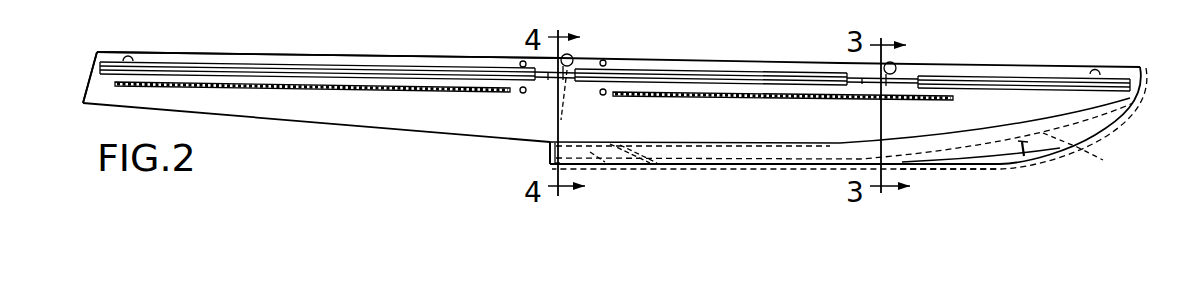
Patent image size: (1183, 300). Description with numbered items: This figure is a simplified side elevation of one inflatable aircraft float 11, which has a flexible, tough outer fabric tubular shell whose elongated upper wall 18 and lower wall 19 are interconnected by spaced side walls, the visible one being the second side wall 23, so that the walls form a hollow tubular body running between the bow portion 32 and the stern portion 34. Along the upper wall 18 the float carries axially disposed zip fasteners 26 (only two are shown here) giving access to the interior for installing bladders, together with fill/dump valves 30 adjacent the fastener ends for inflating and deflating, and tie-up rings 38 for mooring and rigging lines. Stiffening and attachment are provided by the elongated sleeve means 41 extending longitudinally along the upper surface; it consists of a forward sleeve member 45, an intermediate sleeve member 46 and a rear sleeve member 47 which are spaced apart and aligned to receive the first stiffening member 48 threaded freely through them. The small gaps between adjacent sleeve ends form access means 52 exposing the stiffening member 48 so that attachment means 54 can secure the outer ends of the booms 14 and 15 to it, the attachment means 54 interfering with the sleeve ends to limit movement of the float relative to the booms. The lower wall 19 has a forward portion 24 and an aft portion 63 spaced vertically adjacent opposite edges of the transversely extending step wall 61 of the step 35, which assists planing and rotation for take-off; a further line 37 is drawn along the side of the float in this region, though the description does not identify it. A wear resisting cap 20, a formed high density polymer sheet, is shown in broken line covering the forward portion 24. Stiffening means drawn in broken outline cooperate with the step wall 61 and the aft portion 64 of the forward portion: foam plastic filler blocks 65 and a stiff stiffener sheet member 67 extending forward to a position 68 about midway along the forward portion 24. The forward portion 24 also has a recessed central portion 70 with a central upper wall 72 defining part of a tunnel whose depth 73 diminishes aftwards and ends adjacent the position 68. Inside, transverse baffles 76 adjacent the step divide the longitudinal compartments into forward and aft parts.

The float 11 is at (992, 51).
The boom 14 is at (897, 65).
The boom 15 is at (573, 57).
The upper wall 18 is at (358, 52).
The lower wall 19 is at (446, 130).
The wear resisting cap 20 is at (928, 175).
The second side wall 23 is at (753, 121).
The forward portion 24 is at (718, 165).
The zip fastener 26 is at (257, 87).
The fill/dump valve 30 is at (522, 67).
The bow portion 32 is at (1130, 106).
The stern portion 34 is at (96, 57).
The step 35 is at (547, 158).
The gunwale 37 is at (961, 133).
The tie-up ring 38 is at (131, 58).
The first sleeve means 41 is at (740, 74).
The forward sleeve member 45 is at (1013, 88).
The intermediate sleeve member 46 is at (800, 77).
The rear sleeve member 47 is at (364, 76).
The first stiffening member 48 is at (549, 81).
The access means 52 is at (542, 72).
The attachment means 54 is at (567, 70).
The step wall 61 is at (523, 163).
The aft portion 63 is at (263, 123).
The aft portion of the forward portion 64 is at (650, 163).
The foam plastic filler block 65 is at (605, 163).
The stiffener sheet member 67 is at (683, 158).
The position 68 is at (797, 162).
The recessed central portion 70 is at (1090, 130).
The central upper wall 72 is at (1082, 152).
The depth 73 is at (1030, 156).
The transverse baffle 76 is at (562, 119).